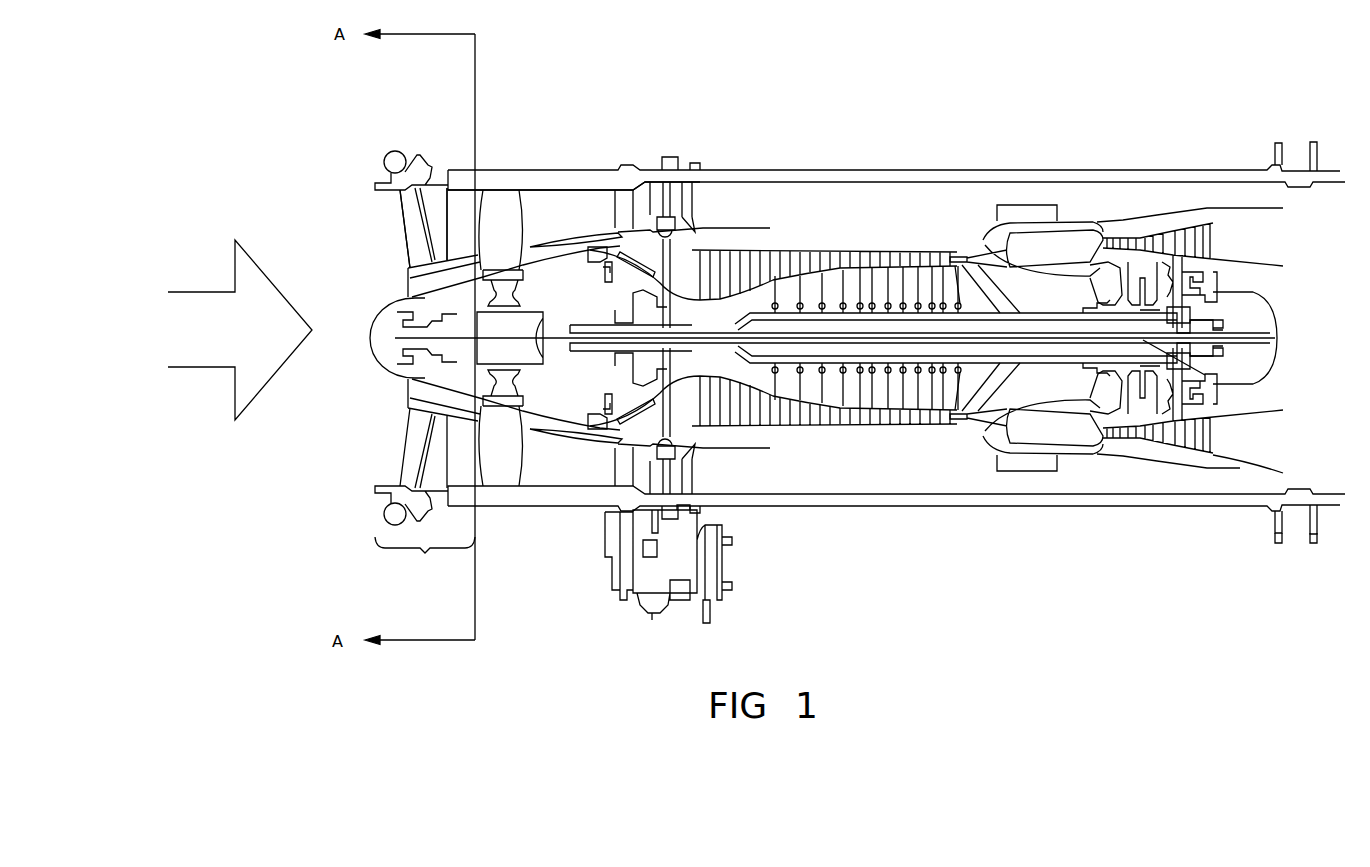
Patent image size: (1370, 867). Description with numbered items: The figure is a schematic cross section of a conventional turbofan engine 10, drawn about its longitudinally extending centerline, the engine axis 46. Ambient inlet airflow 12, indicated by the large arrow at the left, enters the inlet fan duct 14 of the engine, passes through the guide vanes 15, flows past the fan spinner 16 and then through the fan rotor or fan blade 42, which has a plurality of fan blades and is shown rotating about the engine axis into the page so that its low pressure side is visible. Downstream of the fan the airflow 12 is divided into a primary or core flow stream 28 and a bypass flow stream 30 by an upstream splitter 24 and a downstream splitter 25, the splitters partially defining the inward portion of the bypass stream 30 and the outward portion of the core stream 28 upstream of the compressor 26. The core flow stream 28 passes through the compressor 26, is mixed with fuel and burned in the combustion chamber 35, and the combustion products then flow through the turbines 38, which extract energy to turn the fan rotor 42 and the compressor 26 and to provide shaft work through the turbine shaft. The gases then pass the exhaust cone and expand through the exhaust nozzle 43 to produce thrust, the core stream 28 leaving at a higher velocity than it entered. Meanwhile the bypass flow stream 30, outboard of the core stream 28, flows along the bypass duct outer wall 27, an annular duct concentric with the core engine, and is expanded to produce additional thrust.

The turbofan engine 10 is at (832, 131).
The ambient inlet airflow 12 is at (206, 339).
The inlet fan duct 14 is at (425, 364).
The guide vanes 15 is at (462, 200).
The fan spinner 16 is at (407, 382).
The upstream splitter 24 is at (410, 258).
The downstream splitter 25 is at (530, 242).
The compressor 26 is at (812, 418).
The bypass duct outer wall 27 is at (1023, 511).
The core flow stream 28 is at (562, 262).
The bypass flow stream 30 is at (577, 207).
The combustion chamber 35 is at (1100, 235).
The turbines 38 is at (1193, 245).
The fan rotor (fan blade) 42 is at (510, 240).
The exhaust nozzle 43 is at (1283, 208).
The engine axis 46 is at (1213, 374).